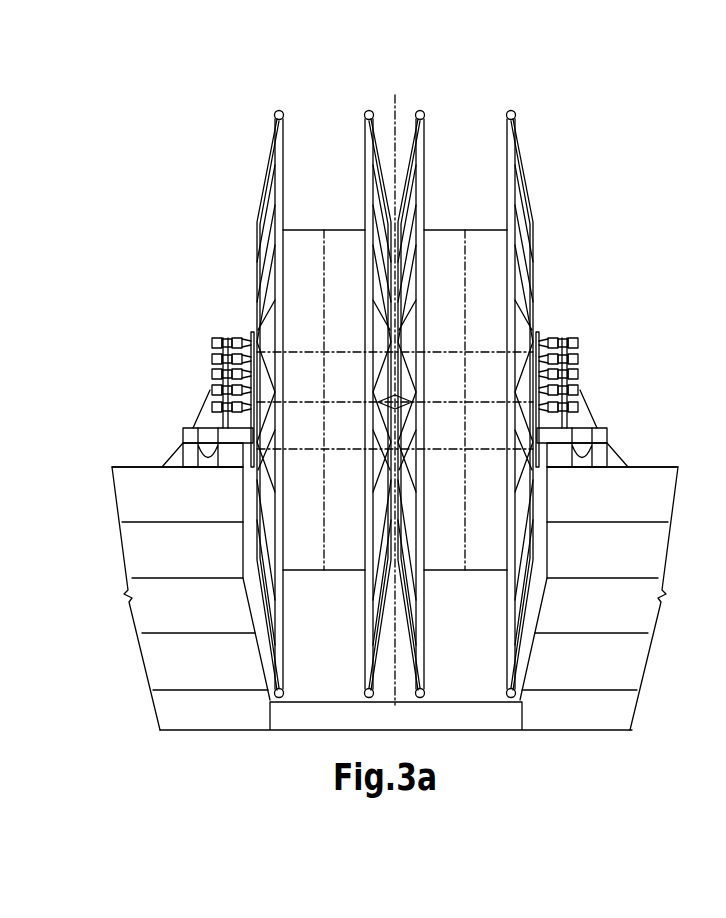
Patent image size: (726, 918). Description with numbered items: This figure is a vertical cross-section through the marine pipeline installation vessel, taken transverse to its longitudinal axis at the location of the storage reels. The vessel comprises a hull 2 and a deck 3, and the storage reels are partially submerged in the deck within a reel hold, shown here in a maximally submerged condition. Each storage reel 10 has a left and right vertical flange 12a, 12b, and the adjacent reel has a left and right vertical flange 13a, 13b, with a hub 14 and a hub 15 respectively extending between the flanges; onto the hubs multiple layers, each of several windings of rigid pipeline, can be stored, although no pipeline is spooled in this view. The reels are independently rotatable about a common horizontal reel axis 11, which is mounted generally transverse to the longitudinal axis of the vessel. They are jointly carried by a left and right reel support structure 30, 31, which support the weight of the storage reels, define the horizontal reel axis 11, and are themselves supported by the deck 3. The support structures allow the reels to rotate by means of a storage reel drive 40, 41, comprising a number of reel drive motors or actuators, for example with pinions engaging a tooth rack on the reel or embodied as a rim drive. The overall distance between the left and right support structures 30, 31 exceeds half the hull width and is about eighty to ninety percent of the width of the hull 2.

The storage reel 10 is at (226, 200).
The left vertical flange 12a is at (281, 130).
The right vertical flange 12b is at (368, 162).
The left vertical flange 13a is at (423, 130).
The right vertical flange 13b is at (516, 118).
The hub 14 is at (302, 230).
The hub 15 is at (442, 230).
The horizontal reel axis 11 is at (297, 402).
The hull 2 is at (395, 598).
The deck 3 is at (645, 463).
The left reel support structure 30 is at (200, 392).
The right reel support structure 31 is at (595, 390).
The storage reel drive 40 is at (222, 325).
The storage reel drive 41 is at (572, 325).